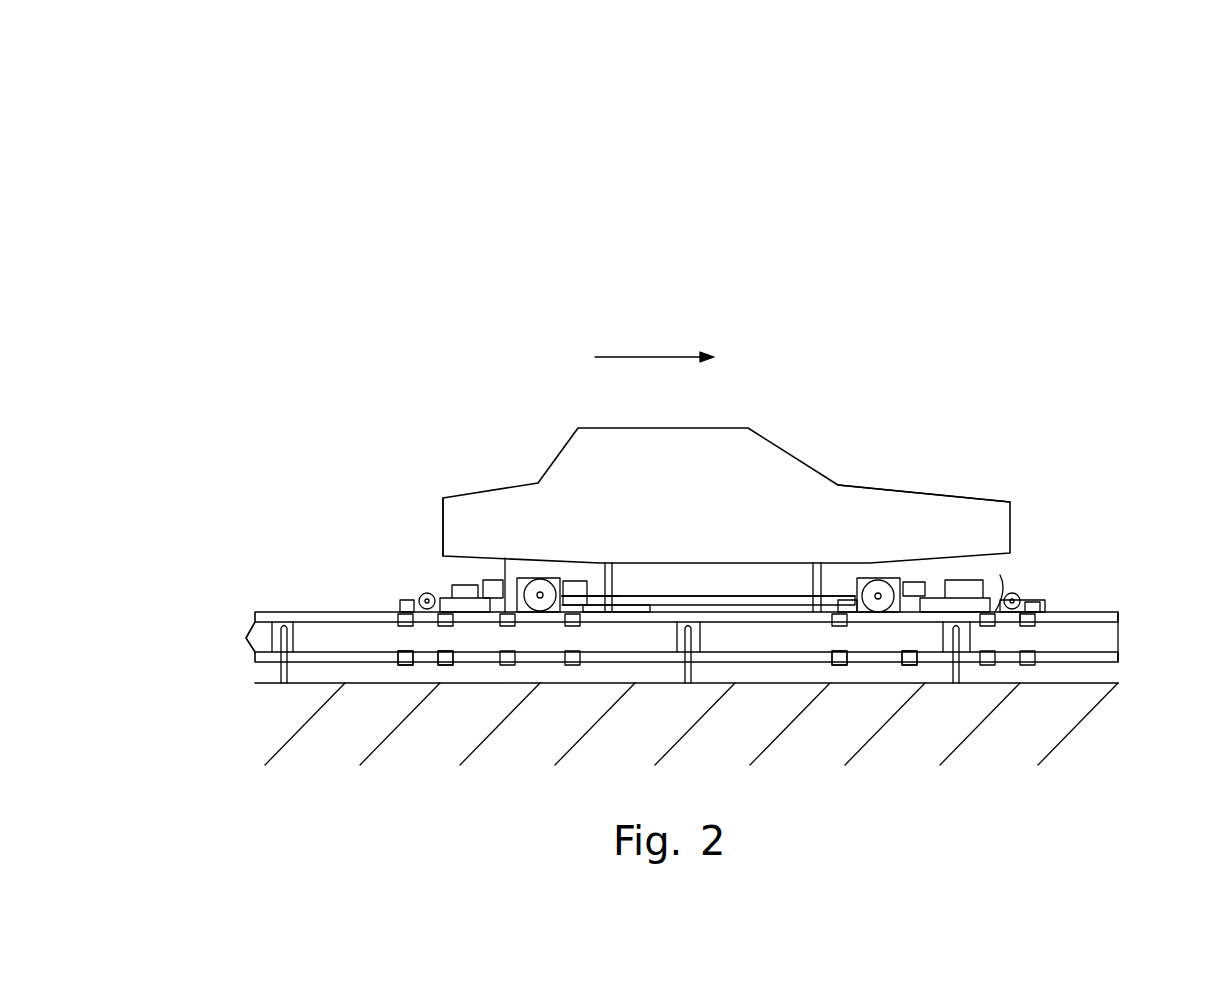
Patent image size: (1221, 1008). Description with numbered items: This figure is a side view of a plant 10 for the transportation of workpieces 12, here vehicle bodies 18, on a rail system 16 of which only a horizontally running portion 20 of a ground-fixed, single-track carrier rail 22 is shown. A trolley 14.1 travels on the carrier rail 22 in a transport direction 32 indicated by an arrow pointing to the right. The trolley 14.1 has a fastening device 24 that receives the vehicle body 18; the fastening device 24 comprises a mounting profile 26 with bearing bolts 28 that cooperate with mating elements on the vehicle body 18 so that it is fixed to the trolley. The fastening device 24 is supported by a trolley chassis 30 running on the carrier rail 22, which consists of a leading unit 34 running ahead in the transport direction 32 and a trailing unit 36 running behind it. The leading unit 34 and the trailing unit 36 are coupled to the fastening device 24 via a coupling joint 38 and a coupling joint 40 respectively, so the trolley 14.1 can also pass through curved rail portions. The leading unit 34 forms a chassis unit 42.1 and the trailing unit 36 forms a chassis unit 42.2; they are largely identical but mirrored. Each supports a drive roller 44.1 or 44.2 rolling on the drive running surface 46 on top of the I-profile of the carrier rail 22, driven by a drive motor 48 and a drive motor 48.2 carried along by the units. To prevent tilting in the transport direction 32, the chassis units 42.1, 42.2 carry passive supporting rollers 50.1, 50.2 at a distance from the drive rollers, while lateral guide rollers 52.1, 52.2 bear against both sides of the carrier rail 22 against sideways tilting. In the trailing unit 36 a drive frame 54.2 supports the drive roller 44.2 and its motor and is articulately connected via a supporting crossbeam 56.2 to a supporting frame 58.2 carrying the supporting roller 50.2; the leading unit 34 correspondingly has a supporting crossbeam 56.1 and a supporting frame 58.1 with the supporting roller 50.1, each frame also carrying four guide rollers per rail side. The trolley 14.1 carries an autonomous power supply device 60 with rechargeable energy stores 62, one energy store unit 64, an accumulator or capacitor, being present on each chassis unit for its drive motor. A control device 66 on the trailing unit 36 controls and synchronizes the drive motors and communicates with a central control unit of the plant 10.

The plant for the transportation of workpieces 10 is at (1128, 106).
The workpieces 12 is at (783, 433).
The trolley 14.1 is at (1004, 353).
The rail system 16 is at (232, 664).
The vehicle body 18 is at (803, 470).
The horizontally running portion 20 is at (232, 631).
The carrier rail 22 is at (266, 612).
The fastening device 24 is at (706, 594).
The mounting profile 26 is at (784, 594).
The bearing bolts 28 is at (808, 590).
The trolley chassis 30 is at (1072, 635).
The transport direction 32 is at (652, 357).
The leading unit 34 is at (1048, 555).
The trailing unit 36 is at (508, 550).
The coupling joint 38 is at (845, 598).
The coupling joint 40 is at (605, 618).
The chassis unit 42.1 is at (1050, 597).
The chassis unit 42.2 is at (545, 595).
The drive roller 44.1 is at (878, 598).
The drive roller 44.2 is at (538, 612).
The drive running surface 46 is at (283, 612).
The drive motor 48 is at (910, 596).
The drive motor 48.2 is at (575, 590).
The passive supporting roller 50.1 is at (1028, 620).
The supporting roller 50.2 is at (420, 598).
The lateral guide rollers 52.1 is at (855, 660).
The lateral guide rollers 52.2 is at (396, 663).
The drive frame 54.2 is at (598, 600).
The supporting crossbeam 56.1 is at (947, 603).
The supporting crossbeam 56.2 is at (468, 605).
The supporting frame 58.1 is at (1020, 612).
The supporting frame 58.2 is at (400, 605).
The autonomous power supply device 60 is at (458, 540).
The rechargeable energy stores 62 is at (491, 572).
The energy store unit 64 is at (965, 590).
The control device 66 is at (462, 598).